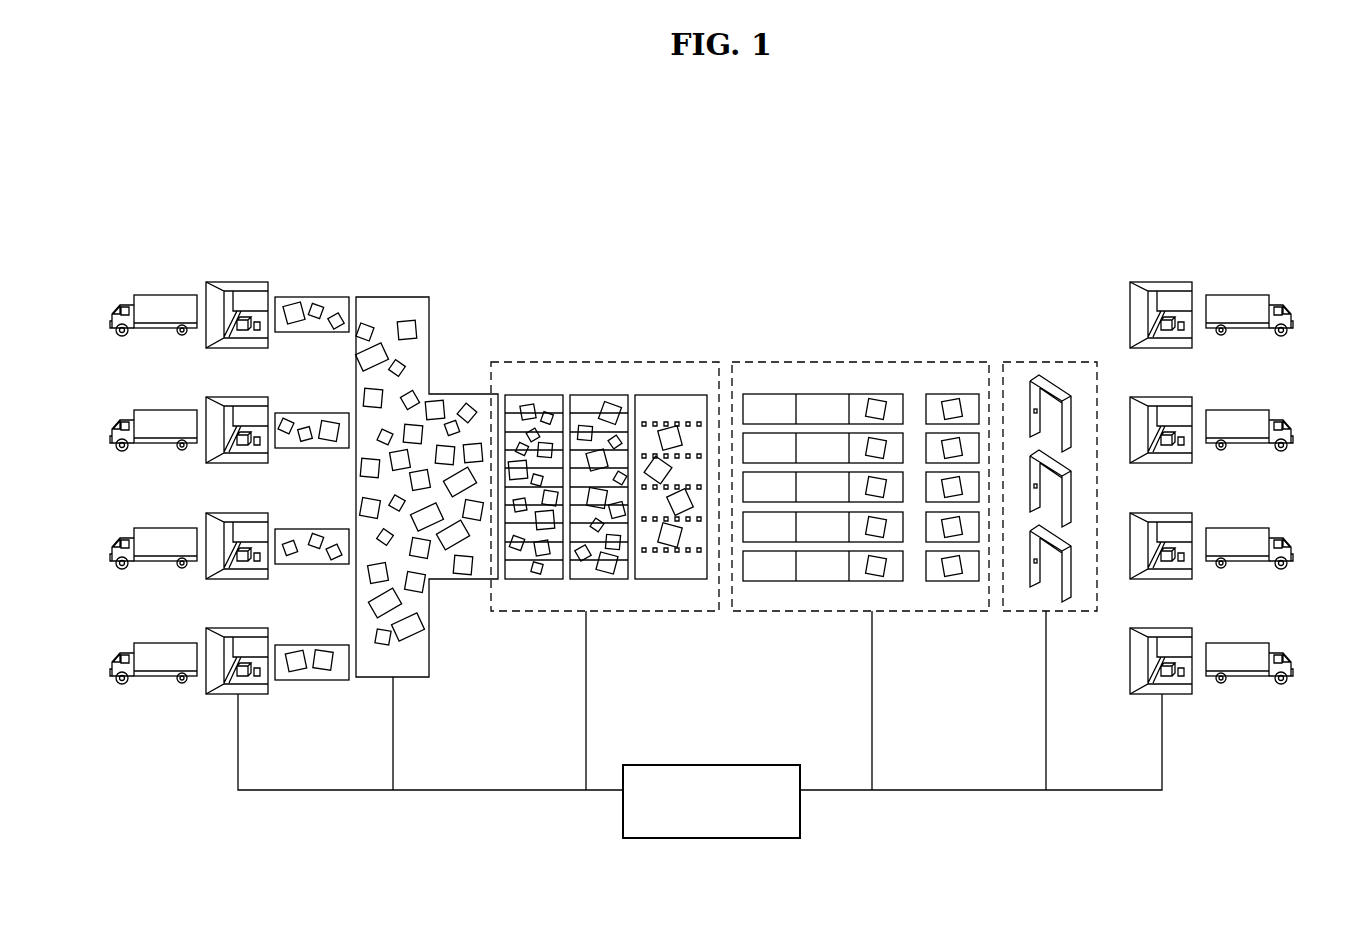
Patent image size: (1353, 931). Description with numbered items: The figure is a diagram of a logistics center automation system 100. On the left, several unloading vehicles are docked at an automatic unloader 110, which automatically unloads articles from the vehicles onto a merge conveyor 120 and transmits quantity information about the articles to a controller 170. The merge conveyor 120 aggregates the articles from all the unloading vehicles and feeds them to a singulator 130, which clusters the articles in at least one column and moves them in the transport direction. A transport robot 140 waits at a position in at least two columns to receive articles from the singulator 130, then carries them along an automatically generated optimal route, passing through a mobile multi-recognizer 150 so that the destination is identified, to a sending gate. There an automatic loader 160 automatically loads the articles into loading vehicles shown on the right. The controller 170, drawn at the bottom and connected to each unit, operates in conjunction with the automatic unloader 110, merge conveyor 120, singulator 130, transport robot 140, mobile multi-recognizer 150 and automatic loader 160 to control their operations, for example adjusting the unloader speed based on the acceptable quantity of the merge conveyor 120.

The logistics center automation system 100 is at (695, 203).
The automatic unloader 110 is at (237, 281).
The merge conveyor 120 is at (393, 297).
The singulator 130 is at (606, 362).
The transport robot 140 is at (862, 362).
The mobile multi-recognizer 150 is at (1052, 362).
The automatic loader 160 is at (1161, 281).
The controller 170 is at (711, 801).